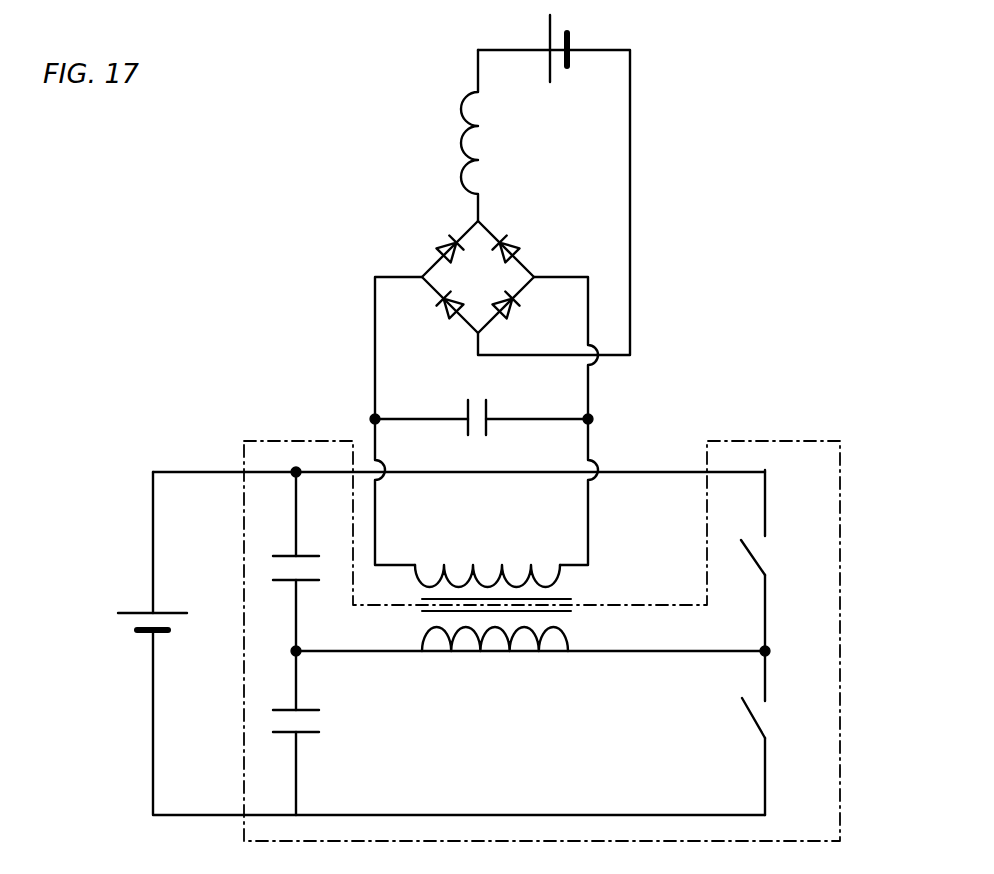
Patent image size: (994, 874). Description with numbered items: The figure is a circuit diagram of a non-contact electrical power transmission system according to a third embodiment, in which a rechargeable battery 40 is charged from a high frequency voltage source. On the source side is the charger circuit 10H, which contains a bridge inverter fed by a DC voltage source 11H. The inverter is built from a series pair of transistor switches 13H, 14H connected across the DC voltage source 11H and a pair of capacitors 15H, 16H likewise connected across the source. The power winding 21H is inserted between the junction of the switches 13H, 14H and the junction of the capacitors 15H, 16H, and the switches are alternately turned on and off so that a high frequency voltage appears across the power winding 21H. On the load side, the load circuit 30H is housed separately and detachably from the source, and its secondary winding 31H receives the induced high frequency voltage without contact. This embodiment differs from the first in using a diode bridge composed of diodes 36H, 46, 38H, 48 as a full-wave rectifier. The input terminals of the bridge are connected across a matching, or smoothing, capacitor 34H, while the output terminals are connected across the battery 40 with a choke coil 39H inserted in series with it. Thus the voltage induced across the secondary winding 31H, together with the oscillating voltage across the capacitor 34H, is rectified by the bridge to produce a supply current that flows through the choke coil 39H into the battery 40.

The charger circuit 10H is at (153, 472).
The DC voltage source 11H is at (127, 622).
The transistor switch 13H is at (772, 554).
The transistor switch 14H is at (772, 714).
The capacitor 15H is at (272, 565).
The capacitor 16H is at (273, 720).
The power winding 21H is at (495, 655).
The load circuit 30H is at (632, 202).
The secondary winding 31H is at (437, 563).
The matching capacitor 34H is at (478, 395).
The diode 36H is at (443, 230).
The diode 38H is at (512, 233).
The choke coil 39H is at (443, 145).
The rechargeable battery 40 is at (562, 20).
The diode 46 is at (443, 310).
The diode 48 is at (520, 318).